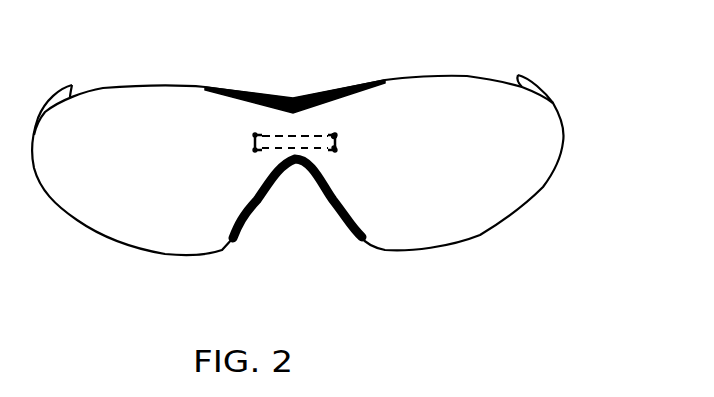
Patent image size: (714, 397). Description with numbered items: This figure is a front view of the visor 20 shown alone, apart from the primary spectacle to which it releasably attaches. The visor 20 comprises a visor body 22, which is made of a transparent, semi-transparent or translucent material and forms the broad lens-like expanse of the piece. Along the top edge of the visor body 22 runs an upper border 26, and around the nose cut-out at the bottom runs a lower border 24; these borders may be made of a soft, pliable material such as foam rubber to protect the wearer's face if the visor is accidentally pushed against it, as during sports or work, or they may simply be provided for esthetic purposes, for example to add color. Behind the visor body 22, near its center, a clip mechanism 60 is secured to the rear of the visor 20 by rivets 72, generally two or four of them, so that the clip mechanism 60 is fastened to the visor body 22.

The visor 20 is at (321, 154).
The visor body 22 is at (530, 172).
The lower border 24 is at (340, 223).
The upper border 26 is at (237, 88).
The clip mechanism 60 is at (297, 145).
The rivets 72 is at (334, 136).